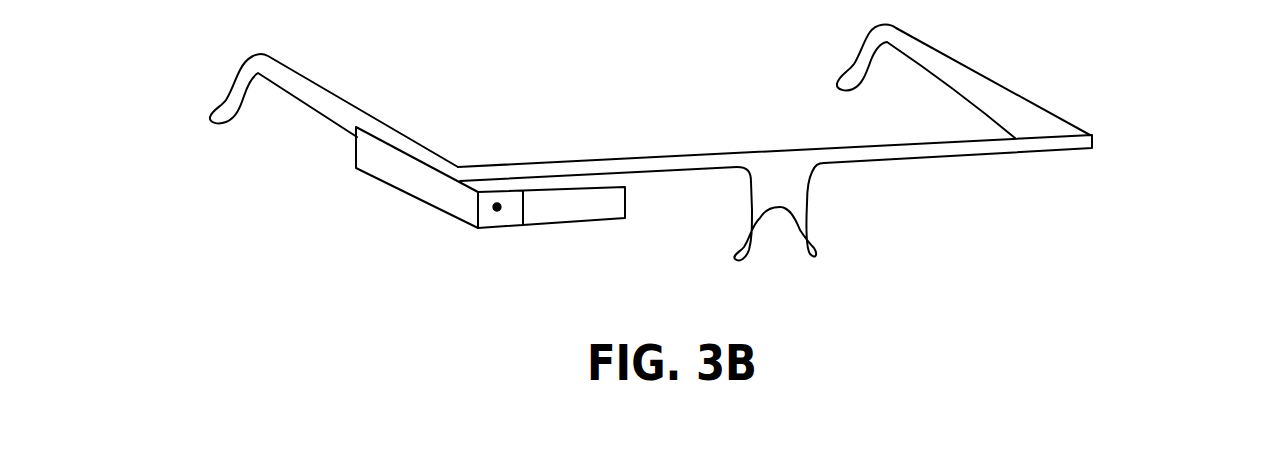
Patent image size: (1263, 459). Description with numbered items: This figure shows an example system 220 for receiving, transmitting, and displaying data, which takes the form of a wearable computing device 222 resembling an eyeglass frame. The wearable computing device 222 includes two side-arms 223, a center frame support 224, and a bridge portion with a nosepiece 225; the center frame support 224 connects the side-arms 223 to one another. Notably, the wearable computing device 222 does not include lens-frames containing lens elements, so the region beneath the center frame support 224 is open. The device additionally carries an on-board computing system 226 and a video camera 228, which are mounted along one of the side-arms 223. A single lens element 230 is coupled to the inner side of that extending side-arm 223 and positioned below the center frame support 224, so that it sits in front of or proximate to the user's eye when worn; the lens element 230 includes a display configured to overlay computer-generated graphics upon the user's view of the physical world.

The system 220 is at (1075, 59).
The wearable computing device 222 is at (1093, 198).
The side-arms 223 is at (316, 98).
The center frame support 224 is at (668, 158).
The nosepiece 225 is at (803, 210).
The on-board computing system 226 is at (393, 187).
The video camera 228 is at (496, 210).
The single lens element 230 is at (577, 223).